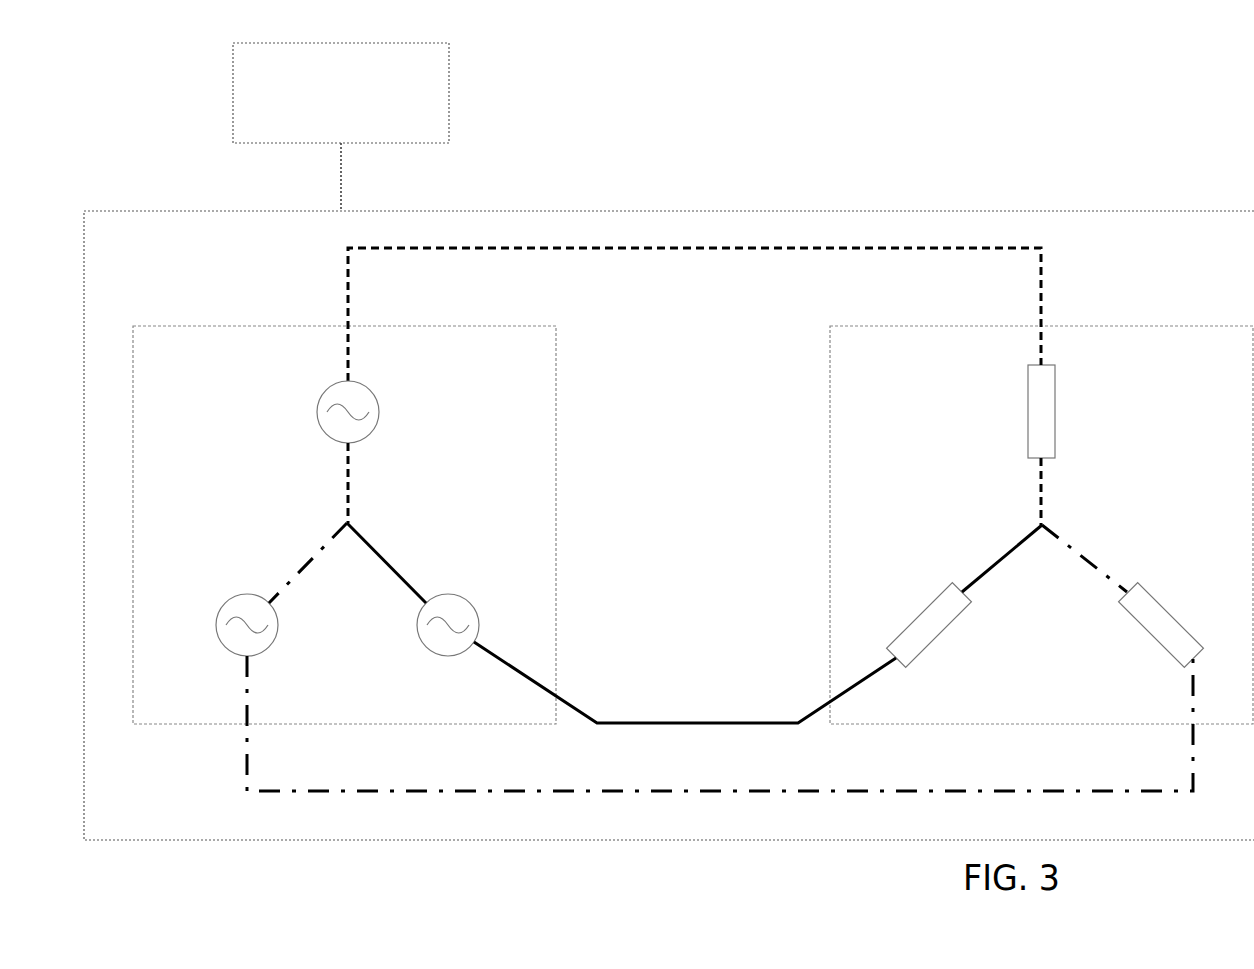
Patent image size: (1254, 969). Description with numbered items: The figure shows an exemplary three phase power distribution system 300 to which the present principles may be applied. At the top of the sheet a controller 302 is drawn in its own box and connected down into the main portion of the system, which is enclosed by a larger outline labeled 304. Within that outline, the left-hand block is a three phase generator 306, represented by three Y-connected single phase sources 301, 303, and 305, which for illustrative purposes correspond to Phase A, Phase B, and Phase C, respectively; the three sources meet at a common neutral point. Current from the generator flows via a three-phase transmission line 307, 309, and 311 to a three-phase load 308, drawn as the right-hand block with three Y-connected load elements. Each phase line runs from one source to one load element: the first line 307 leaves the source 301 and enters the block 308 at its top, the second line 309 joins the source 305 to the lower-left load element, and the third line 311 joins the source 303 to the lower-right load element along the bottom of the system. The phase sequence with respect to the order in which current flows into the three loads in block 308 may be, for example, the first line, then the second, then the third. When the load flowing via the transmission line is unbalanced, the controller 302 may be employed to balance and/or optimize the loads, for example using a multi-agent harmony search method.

The three phase power distribution system 300 is at (1155, 156).
The controller 302 is at (358, 121).
The power conversion block 304 is at (168, 272).
The three phase generator 306 is at (416, 504).
The three-phase load 308 is at (1138, 504).
The single phase source 301 is at (303, 411).
The single phase source 303 is at (238, 586).
The single phase source 305 is at (461, 586).
The three-phase transmission line 307 is at (733, 262).
The three-phase transmission line 309 is at (751, 713).
The three-phase transmission line 311 is at (230, 761).